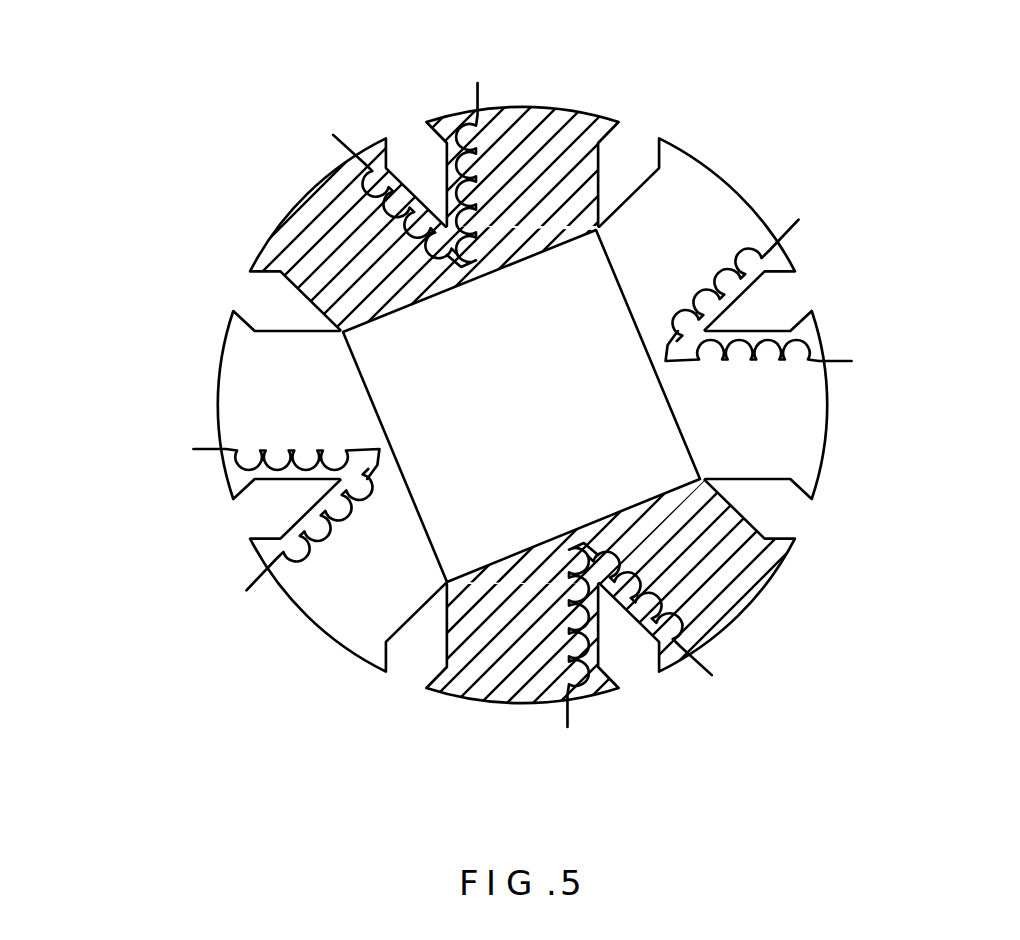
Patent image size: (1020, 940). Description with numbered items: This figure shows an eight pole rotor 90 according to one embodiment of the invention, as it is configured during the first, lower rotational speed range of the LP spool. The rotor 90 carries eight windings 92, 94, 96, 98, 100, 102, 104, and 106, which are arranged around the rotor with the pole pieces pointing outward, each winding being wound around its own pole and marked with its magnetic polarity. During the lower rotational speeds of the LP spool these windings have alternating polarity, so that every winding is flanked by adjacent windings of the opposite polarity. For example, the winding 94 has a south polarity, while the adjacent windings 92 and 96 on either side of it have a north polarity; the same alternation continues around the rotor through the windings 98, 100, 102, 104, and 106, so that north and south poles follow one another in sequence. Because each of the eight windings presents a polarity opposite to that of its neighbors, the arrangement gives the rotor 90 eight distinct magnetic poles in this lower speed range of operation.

The rotor 90 is at (206, 537).
The winding 92 is at (466, 203).
The winding 94 is at (687, 300).
The winding 96 is at (730, 365).
The winding 98 is at (645, 590).
The winding 100 is at (577, 620).
The winding 102 is at (352, 513).
The winding 104 is at (310, 457).
The winding 106 is at (410, 233).